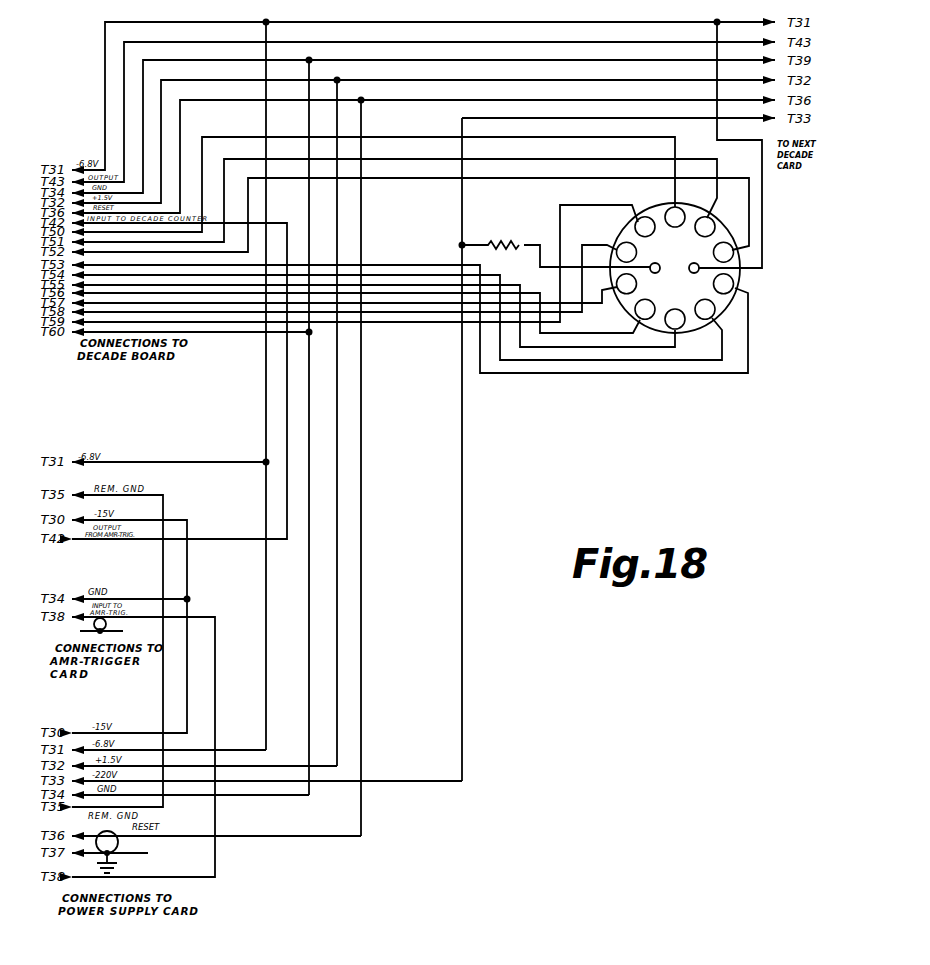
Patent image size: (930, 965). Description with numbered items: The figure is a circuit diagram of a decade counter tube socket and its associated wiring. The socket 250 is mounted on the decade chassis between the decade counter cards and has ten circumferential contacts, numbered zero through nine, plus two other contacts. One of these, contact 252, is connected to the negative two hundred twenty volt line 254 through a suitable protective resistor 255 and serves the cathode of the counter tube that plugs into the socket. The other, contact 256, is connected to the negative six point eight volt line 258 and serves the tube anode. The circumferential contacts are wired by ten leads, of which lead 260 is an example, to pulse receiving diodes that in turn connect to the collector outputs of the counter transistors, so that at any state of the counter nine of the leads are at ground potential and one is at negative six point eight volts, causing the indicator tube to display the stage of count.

The socket 250 is at (741, 279).
The contact 252 is at (654, 262).
The -220 volt line 254 is at (460, 591).
The protective resistor 255 is at (510, 244).
The contact 256 is at (693, 274).
The -6.8 volt line 258 is at (263, 422).
The lead 260 is at (419, 137).